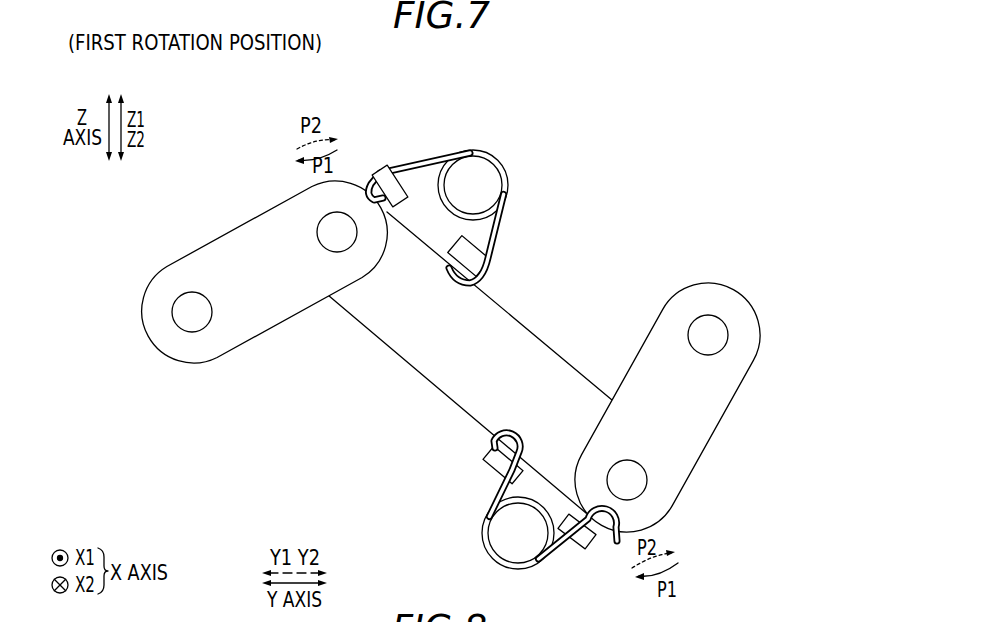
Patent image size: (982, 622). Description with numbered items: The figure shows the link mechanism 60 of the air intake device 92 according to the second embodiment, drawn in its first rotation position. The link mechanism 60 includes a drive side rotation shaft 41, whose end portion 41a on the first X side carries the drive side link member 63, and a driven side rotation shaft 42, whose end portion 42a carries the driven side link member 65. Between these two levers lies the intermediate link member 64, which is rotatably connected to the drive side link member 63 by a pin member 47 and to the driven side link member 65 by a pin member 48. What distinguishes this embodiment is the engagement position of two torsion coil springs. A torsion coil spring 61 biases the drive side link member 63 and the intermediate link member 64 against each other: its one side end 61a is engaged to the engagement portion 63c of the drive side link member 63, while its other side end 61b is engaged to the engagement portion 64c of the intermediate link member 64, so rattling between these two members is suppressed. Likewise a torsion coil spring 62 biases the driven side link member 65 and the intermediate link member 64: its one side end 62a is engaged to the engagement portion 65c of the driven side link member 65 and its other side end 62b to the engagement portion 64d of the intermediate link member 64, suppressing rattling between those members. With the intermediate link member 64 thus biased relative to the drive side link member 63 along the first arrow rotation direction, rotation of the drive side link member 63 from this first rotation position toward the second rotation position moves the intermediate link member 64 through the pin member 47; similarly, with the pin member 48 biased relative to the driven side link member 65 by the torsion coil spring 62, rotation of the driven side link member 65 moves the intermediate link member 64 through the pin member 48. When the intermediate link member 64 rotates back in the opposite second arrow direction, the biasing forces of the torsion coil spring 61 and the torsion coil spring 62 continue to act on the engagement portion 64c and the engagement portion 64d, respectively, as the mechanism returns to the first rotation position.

The link mechanism 60 is at (543, 106).
The air intake device 92 is at (443, 330).
The torsion coil spring 61 is at (482, 178).
The one side end 61a is at (368, 186).
The other side end 61b is at (492, 292).
The torsion coil spring 62 is at (498, 522).
The one side end 62a is at (617, 542).
The other side end 62b is at (490, 430).
The drive side link member 63 is at (232, 242).
The engagement portion 63c is at (397, 190).
The intermediate link member 64 is at (561, 372).
The engagement portion 64c is at (475, 252).
The engagement portion 64d is at (487, 460).
The driven side link member 65 is at (748, 320).
The engagement portion 65c is at (578, 548).
The drive side rotation shaft 41 is at (167, 401).
The end portion 41a is at (192, 313).
The driven side rotation shaft 42 is at (720, 200).
The end portion 42a is at (710, 334).
The pin member 47 is at (335, 231).
The pin member 48 is at (635, 486).